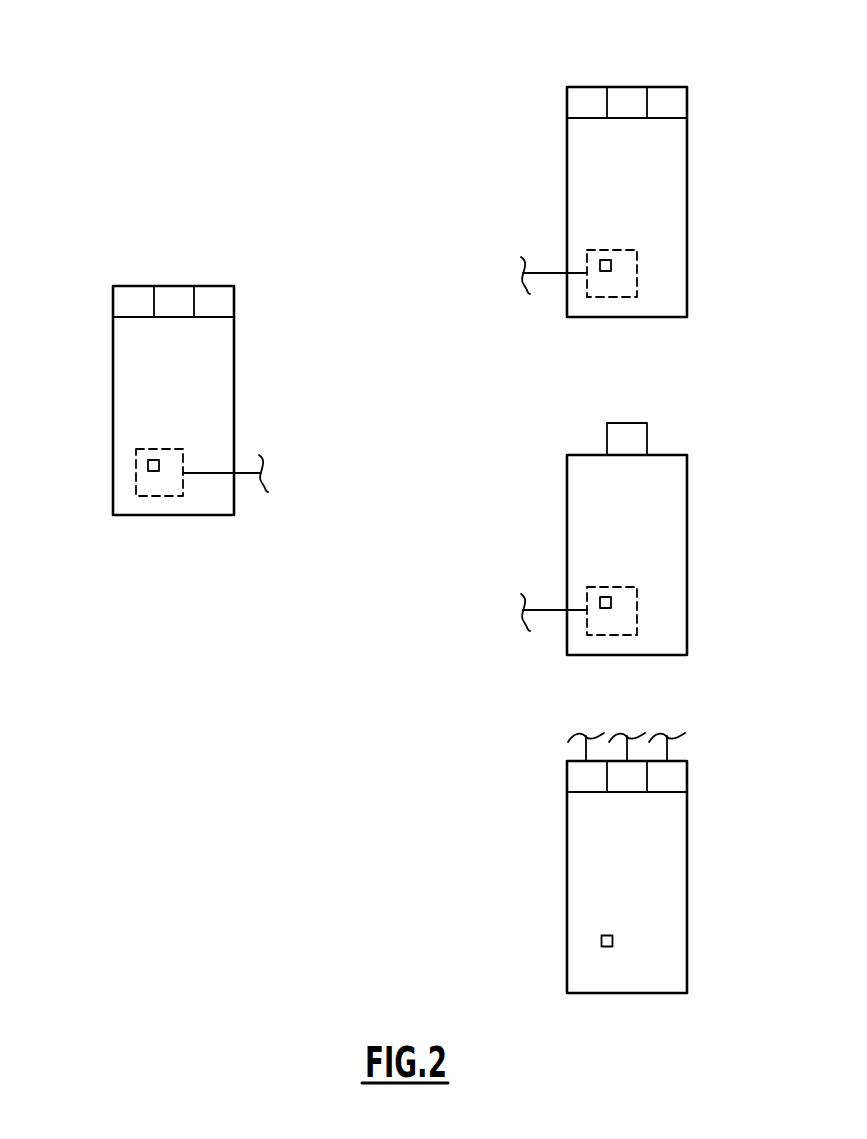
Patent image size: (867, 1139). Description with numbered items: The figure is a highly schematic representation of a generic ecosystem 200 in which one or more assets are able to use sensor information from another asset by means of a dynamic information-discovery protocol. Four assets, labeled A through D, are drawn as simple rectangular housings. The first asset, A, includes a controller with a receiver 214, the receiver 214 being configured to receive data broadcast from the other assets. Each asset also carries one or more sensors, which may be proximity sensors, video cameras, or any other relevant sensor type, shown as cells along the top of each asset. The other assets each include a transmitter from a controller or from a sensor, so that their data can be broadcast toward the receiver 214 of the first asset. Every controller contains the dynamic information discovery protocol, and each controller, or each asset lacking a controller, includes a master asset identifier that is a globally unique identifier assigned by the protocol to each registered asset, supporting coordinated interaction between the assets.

The generic ecosystem 200 is at (342, 68).
The receiver 214 is at (250, 477).